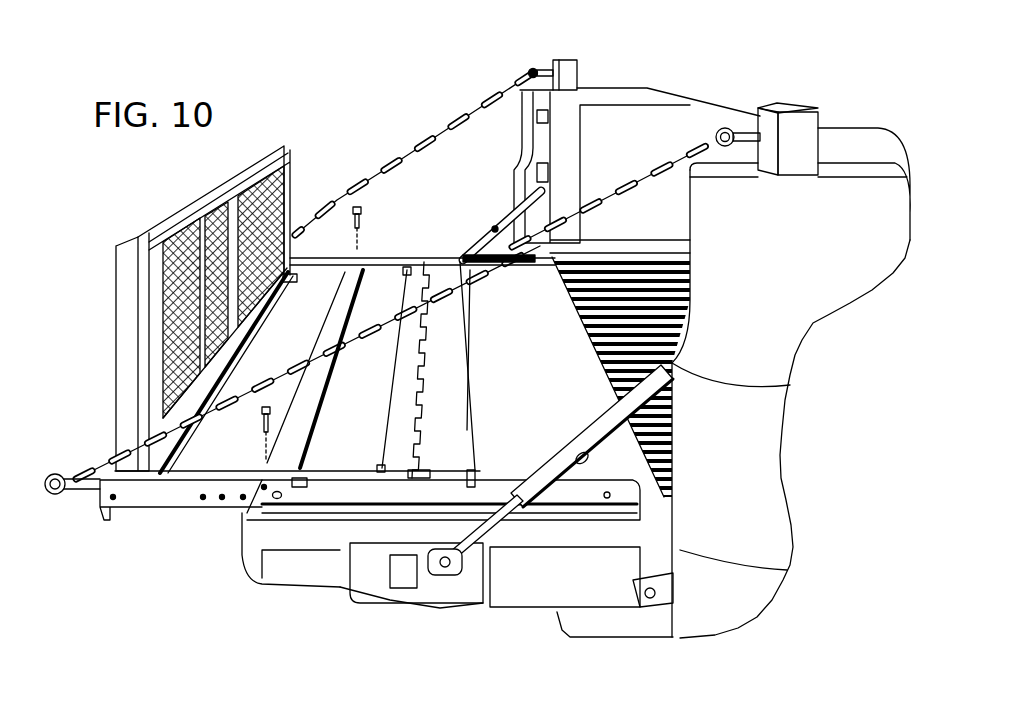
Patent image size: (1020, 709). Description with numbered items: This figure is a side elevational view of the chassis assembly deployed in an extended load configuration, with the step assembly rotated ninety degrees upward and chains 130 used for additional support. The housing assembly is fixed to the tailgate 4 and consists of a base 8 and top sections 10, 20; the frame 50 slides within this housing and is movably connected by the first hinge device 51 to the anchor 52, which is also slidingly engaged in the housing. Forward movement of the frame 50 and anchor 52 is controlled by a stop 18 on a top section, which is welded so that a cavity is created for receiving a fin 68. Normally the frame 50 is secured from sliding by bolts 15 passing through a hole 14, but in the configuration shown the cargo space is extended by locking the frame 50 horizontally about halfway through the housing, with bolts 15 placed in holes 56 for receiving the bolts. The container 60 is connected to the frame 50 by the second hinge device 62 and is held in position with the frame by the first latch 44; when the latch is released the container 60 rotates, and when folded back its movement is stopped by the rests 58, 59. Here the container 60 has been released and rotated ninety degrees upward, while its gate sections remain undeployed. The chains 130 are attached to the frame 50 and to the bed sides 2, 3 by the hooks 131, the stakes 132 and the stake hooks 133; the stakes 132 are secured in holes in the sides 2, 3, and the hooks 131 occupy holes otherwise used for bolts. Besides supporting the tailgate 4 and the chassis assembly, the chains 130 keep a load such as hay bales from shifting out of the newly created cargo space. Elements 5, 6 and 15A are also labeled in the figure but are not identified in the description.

The side 2 is at (785, 345).
The side 3 is at (680, 107).
The tailgate 4 is at (530, 595).
The support arm 5 is at (560, 453).
The brace rod 6 is at (495, 222).
The base 8 is at (317, 413).
The top section 10 is at (378, 500).
The hole for receiving bolt 14 is at (263, 490).
The bolt 15 is at (262, 420).
The bolt 15A is at (363, 210).
The stop 18 is at (305, 480).
The top section 20 is at (420, 258).
The first latch 44 is at (227, 183).
The frame 50 is at (397, 383).
The first hinge device 51 is at (420, 363).
The anchor 52 is at (460, 358).
The hole for receiving bolt 56 is at (187, 493).
The rest 58 is at (418, 262).
The rest 59 is at (380, 467).
The container 60 is at (115, 330).
The second hinge device 62 is at (288, 285).
The fin 68 is at (473, 470).
The chain 130 is at (433, 147).
The hook 131 is at (70, 490).
The stake 132 is at (580, 60).
The stake hook 133 is at (533, 68).